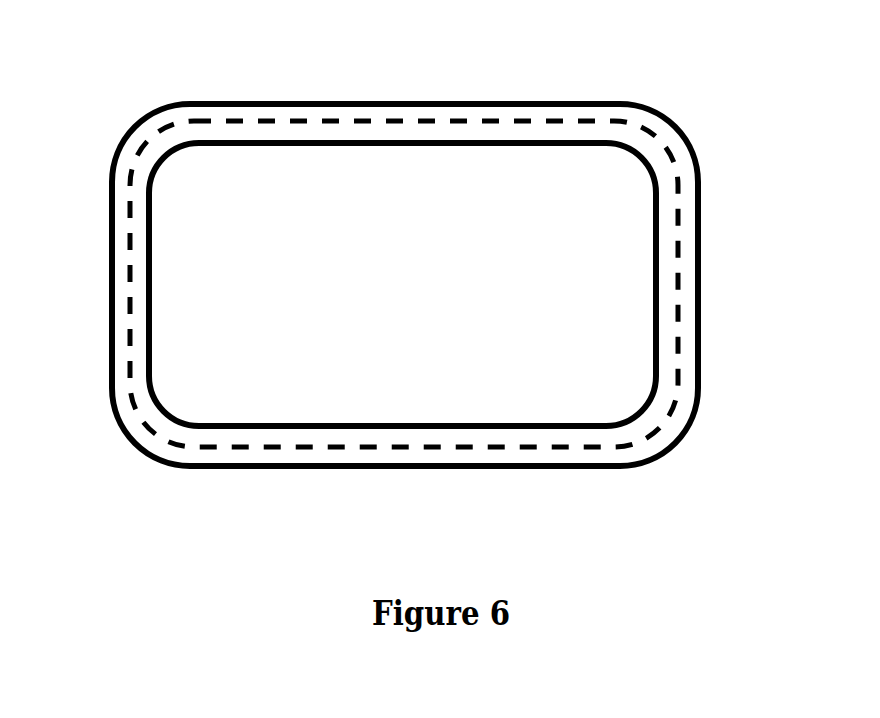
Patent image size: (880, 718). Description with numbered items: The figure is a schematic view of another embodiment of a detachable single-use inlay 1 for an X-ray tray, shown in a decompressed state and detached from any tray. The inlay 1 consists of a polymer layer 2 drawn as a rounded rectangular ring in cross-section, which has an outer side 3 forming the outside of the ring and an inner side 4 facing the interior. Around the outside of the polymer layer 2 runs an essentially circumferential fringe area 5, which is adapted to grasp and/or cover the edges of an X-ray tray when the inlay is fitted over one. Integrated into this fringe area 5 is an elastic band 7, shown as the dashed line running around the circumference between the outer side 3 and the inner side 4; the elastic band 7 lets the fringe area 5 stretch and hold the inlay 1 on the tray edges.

The detachable single-use inlay 1 is at (704, 480).
The polymer layer 2 is at (227, 352).
The outer side 3 is at (652, 133).
The inner side 4 is at (319, 343).
The circumferential fringe area 5 is at (152, 150).
The elastic band 7 is at (384, 118).